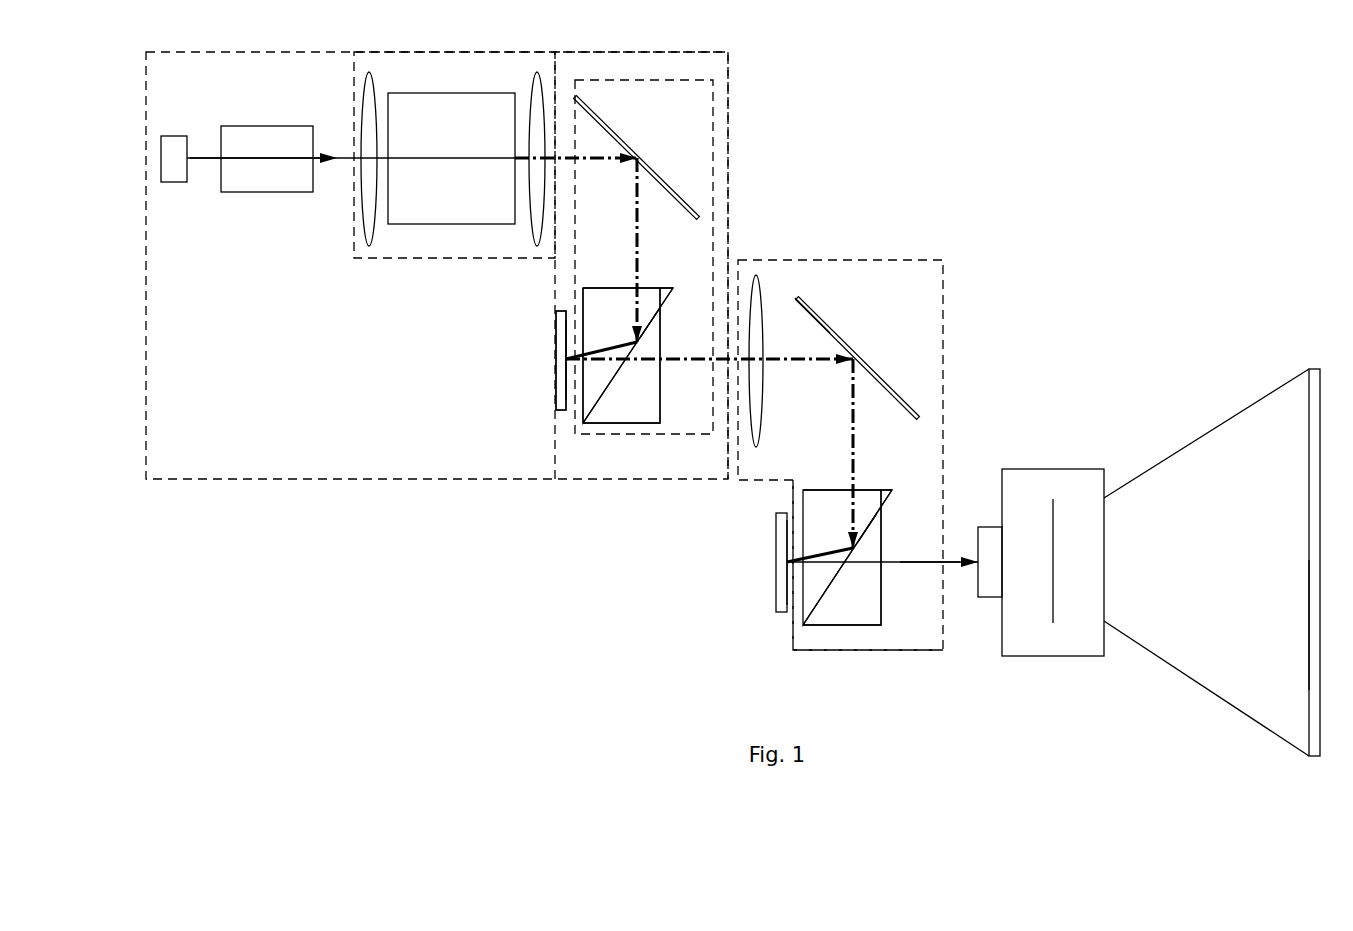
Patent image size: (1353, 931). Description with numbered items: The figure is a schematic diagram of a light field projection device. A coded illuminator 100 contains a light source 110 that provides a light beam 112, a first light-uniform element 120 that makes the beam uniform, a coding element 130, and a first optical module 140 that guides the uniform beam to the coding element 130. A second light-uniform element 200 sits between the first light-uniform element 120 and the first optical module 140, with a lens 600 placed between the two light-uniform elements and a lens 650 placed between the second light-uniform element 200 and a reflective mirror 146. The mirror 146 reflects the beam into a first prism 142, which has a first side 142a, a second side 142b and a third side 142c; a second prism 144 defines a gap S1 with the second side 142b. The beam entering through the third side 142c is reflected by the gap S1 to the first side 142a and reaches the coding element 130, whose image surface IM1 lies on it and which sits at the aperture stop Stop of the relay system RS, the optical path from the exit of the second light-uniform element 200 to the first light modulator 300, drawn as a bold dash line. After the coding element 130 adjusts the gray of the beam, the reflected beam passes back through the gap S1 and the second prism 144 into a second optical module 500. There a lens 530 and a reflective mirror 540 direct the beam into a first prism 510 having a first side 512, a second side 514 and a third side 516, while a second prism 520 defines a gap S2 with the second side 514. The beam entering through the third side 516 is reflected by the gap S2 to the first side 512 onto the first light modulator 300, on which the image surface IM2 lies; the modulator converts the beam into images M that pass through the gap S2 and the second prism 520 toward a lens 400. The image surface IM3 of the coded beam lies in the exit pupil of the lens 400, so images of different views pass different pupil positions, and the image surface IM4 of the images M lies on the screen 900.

The coded illuminator 100 is at (265, 482).
The light source 110 is at (172, 182).
The light beam 112 is at (207, 150).
The first light-uniform element 120 is at (268, 192).
The coding element 130 is at (560, 377).
The first optical module 140 is at (728, 111).
The first prism 142 is at (647, 297).
The first side 142a is at (583, 303).
The second side 142b is at (610, 393).
The third side 142c is at (598, 288).
The second prism 144 is at (642, 403).
The reflective mirror 146 is at (598, 108).
The second light-uniform element 200 is at (445, 93).
The first light modulator 300 is at (782, 567).
The lens 400 is at (1053, 482).
The second optical module 500 is at (852, 260).
The first prism 510 is at (870, 497).
The first side 512 is at (802, 505).
The second side 514 is at (830, 592).
The third side 516 is at (816, 490).
The second prism 520 is at (860, 605).
The lens 530 is at (758, 260).
The reflective mirror 540 is at (818, 312).
The lens 600 is at (369, 72).
The lens 650 is at (537, 72).
The screen 900 is at (1311, 369).
The gap S1 is at (657, 323).
The gap S2 is at (876, 527).
The image surface IM1 is at (577, 392).
The image surface IM2 is at (796, 602).
The image surface IM3 is at (1056, 607).
The image surface IM4 is at (1300, 625).
The images M is at (938, 567).
The relay system RS is at (846, 146).
The aperture stop Stop is at (565, 357).